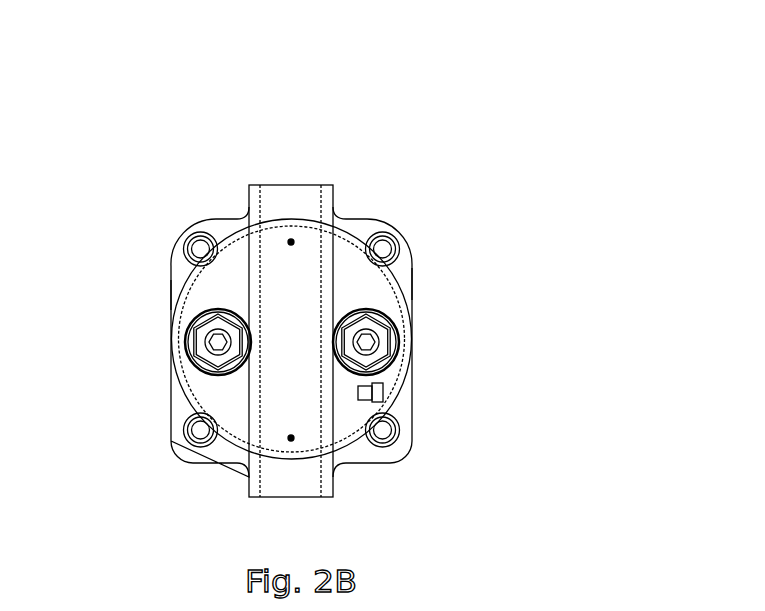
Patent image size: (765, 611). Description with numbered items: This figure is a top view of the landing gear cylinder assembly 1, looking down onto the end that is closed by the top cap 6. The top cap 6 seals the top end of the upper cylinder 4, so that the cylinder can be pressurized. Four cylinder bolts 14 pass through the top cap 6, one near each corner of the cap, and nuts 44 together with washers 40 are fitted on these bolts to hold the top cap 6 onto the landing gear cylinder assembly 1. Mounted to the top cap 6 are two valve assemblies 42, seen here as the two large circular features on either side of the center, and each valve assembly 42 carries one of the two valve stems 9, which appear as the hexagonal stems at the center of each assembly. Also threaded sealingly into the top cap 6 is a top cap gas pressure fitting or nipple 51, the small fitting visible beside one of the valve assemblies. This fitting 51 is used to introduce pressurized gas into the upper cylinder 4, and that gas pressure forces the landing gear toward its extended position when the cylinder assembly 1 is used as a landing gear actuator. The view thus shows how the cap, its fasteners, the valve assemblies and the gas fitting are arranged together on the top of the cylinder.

The landing gear cylinder assembly 1 is at (413, 240).
The upper cylinder 4 is at (178, 293).
The top cap 6 is at (413, 280).
The valve stem 9 is at (212, 303).
The valve assembly 42 is at (297, 245).
The top cap gas pressure fitting 51 is at (384, 388).
The cylinder bolt 14 is at (468, 453).
The nut 44 is at (468, 453).
The washer 40 is at (402, 438).